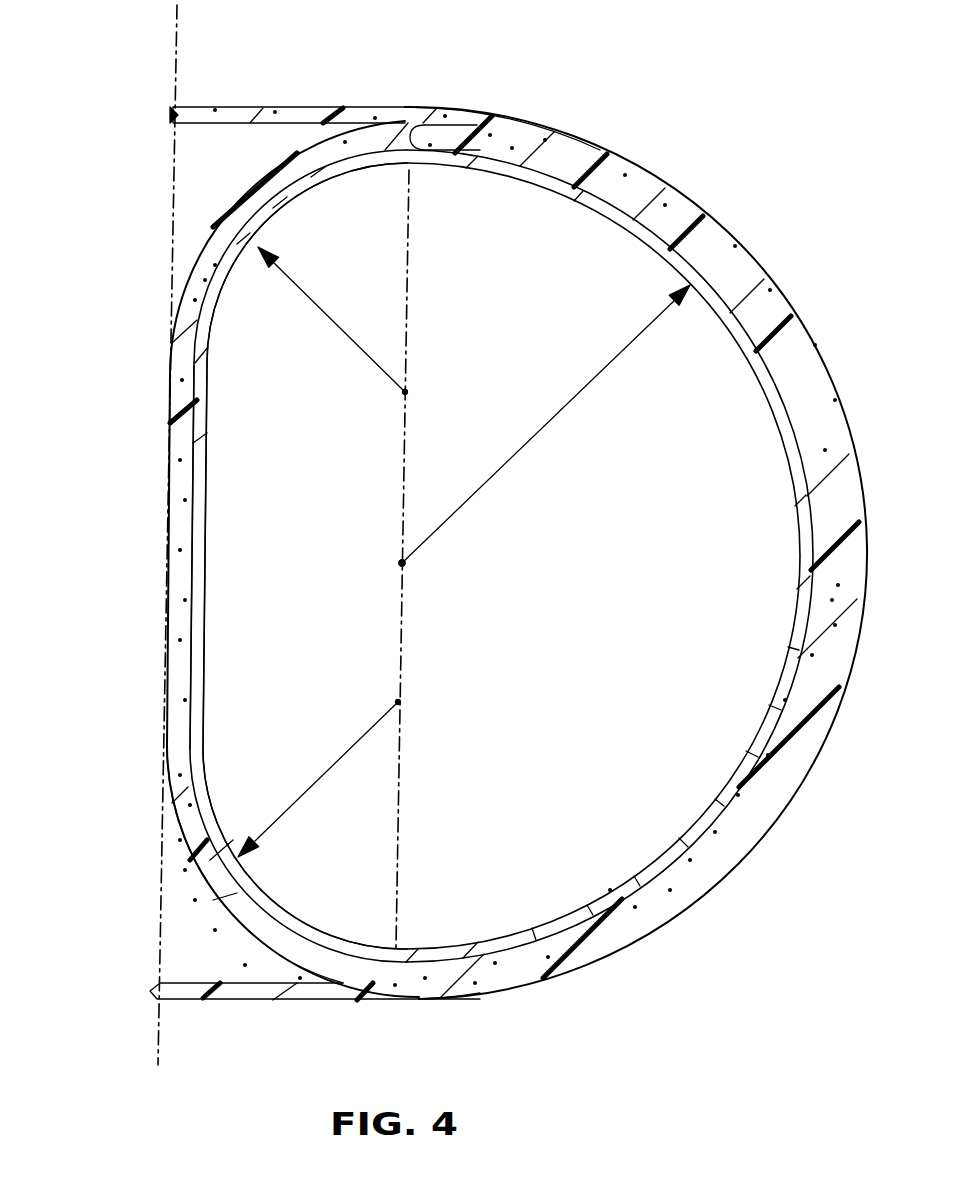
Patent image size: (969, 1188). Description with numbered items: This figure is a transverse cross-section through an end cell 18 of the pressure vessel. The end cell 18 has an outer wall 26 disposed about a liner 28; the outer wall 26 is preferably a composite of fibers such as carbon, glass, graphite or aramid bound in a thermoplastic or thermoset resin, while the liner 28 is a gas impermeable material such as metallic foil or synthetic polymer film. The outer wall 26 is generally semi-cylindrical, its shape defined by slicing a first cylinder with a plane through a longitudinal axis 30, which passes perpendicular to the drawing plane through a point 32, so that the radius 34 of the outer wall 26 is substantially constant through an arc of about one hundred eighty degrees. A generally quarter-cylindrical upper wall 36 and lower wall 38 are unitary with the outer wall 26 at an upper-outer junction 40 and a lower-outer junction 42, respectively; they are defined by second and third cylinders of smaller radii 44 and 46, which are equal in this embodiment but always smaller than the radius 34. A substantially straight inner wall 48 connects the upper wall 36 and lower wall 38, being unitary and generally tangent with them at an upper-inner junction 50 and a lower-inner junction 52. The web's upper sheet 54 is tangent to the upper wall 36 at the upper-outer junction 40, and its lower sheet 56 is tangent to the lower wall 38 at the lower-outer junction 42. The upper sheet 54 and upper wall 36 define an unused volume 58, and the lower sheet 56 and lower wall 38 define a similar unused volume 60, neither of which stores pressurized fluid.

The end cell 18 is at (638, 937).
The outer wall 26 is at (713, 850).
The liner 28 is at (772, 718).
The longitudinal axis 30 is at (408, 565).
The point 32 is at (402, 563).
The radius 34 is at (560, 415).
The upper wall 36 is at (217, 223).
The lower wall 38 is at (212, 895).
The upper-outer junction 40 is at (533, 126).
The lower-outer junction 42 is at (422, 977).
The radius 44 is at (337, 320).
The radius 46 is at (305, 789).
The inner wall 48 is at (188, 512).
The upper-inner junction 50 is at (190, 343).
The lower-inner junction 52 is at (182, 745).
The upper sheet 54 is at (208, 107).
The lower sheet 56 is at (208, 1000).
The unused volume 58 is at (283, 145).
The unused volume 60 is at (258, 965).